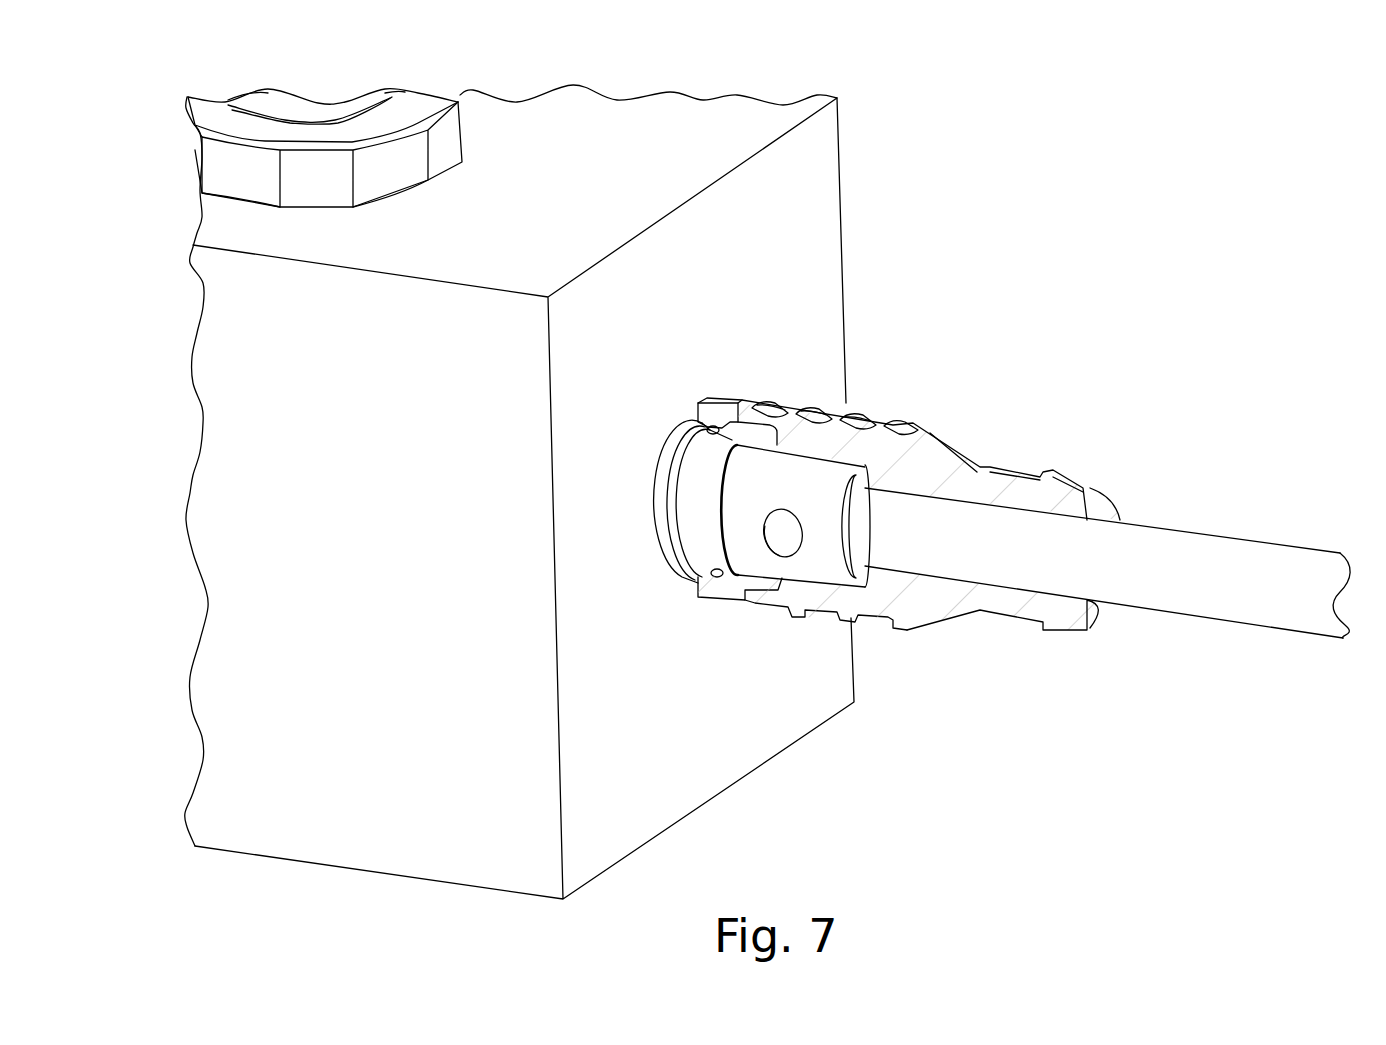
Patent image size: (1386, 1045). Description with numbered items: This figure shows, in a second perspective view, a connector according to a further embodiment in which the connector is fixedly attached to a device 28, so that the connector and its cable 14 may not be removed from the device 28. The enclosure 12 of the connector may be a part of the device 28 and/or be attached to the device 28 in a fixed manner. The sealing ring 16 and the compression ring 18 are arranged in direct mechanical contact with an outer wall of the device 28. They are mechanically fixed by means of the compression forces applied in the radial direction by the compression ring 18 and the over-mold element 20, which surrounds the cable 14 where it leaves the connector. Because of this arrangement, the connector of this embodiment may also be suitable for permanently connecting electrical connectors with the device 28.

The device 28 is at (846, 182).
The enclosure 12 is at (697, 517).
The cable 14 is at (1197, 550).
The sealing ring 16 is at (705, 423).
The compression ring 18 is at (722, 410).
The over-mold element 20 is at (918, 460).